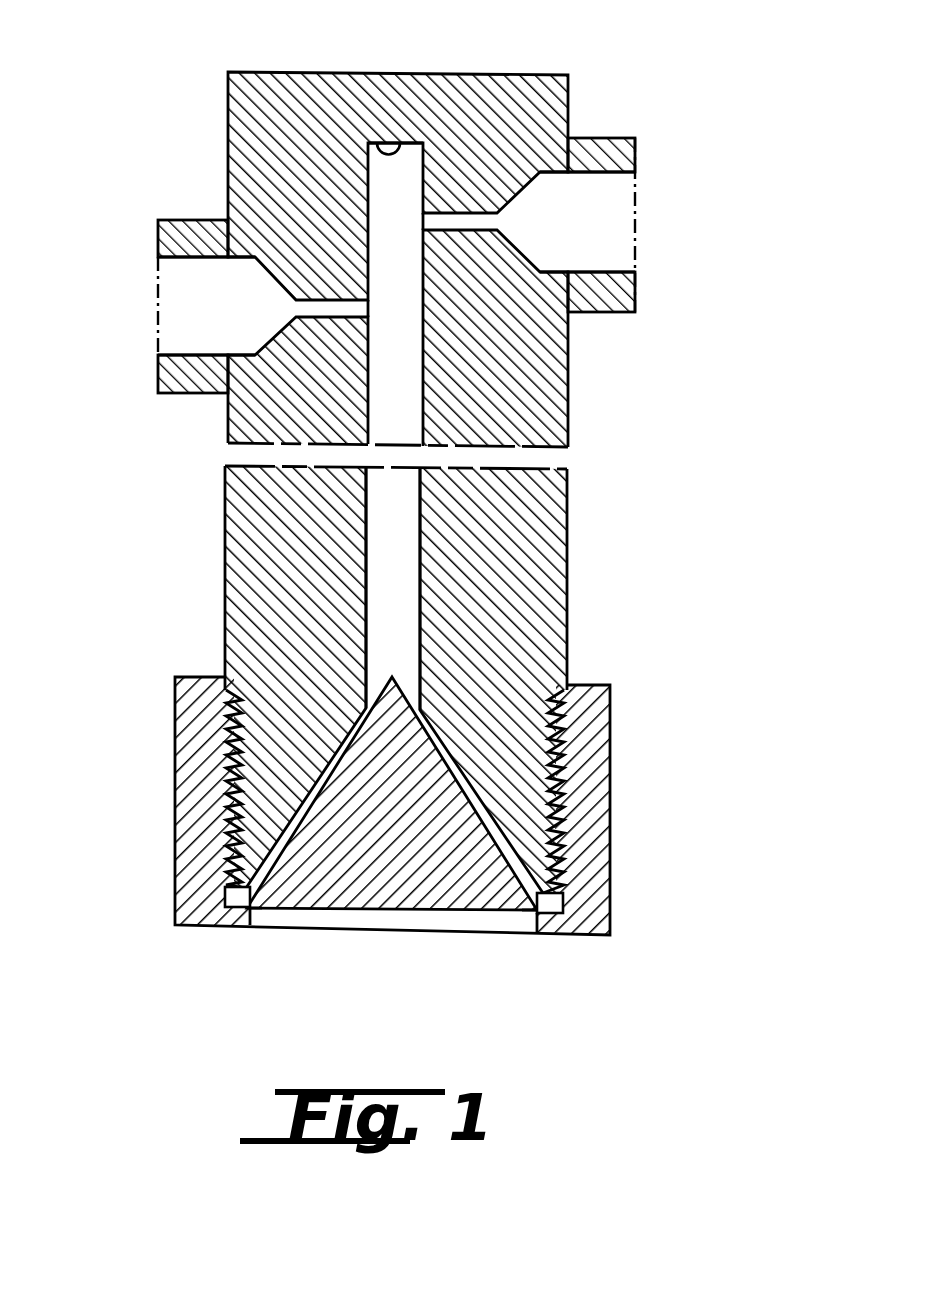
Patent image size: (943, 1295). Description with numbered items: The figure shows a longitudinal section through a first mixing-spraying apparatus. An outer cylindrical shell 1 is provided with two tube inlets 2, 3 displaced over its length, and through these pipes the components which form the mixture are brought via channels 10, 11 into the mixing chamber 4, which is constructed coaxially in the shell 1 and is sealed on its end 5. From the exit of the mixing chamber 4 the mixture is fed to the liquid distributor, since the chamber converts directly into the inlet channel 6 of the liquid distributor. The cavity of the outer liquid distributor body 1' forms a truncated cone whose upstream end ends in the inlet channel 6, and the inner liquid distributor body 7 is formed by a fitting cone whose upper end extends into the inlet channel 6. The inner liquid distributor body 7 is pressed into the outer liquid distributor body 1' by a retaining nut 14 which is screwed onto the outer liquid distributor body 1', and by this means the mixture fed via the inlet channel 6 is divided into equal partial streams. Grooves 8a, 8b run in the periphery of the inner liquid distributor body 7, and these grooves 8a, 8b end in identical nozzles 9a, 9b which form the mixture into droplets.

The outer cylindrical shell 1 is at (452, 259).
The outer liquid distributor body 1' is at (455, 679).
The tube inlet 2 is at (604, 137).
The tube inlet 3 is at (180, 220).
The mixing chamber 4 is at (425, 382).
The end 5 is at (375, 141).
The inlet channel 6 is at (385, 569).
The inner liquid distributor body 7 is at (393, 888).
The groove 8a is at (543, 880).
The groove 8b is at (240, 874).
The nozzle 9a is at (248, 906).
The nozzle 9b is at (537, 893).
The channel 10 is at (492, 222).
The channel 11 is at (300, 306).
The retaining nut 14 is at (187, 795).